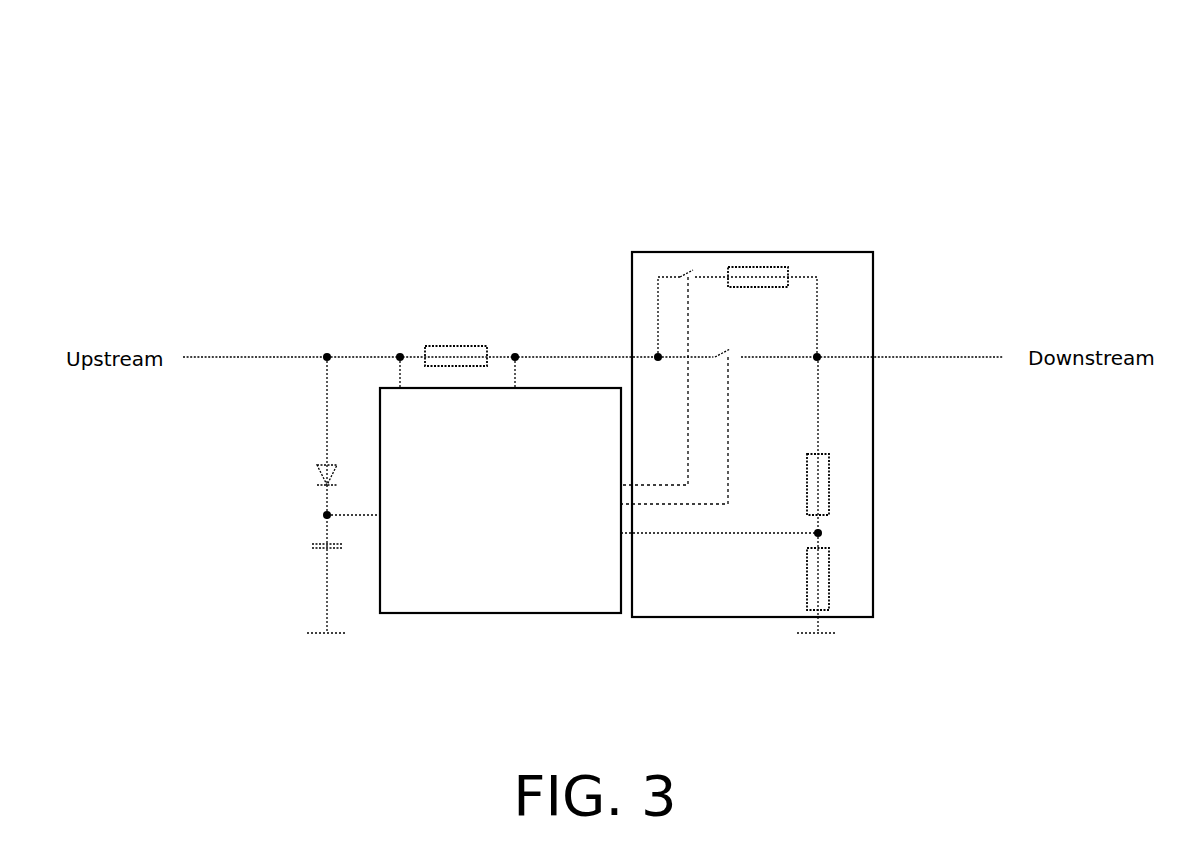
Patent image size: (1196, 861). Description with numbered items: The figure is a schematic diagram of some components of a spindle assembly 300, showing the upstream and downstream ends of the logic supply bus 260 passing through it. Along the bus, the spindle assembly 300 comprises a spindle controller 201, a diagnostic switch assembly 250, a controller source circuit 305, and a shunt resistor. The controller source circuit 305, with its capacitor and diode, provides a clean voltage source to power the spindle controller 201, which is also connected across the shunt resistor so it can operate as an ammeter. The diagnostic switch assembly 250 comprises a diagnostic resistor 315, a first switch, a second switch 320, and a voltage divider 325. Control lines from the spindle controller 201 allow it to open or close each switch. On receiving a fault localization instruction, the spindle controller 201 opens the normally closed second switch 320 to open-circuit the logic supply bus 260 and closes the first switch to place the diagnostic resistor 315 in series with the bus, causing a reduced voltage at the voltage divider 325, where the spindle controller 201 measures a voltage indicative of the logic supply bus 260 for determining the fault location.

The spindle assembly 300 is at (330, 93).
The logic supply bus 260 is at (252, 357).
The controller source circuit 305 is at (303, 503).
The spindle controller 201 is at (500, 500).
The diagnostic switch assembly 250 is at (873, 305).
The diagnostic resistor 315 is at (760, 267).
The second switch 320 is at (727, 343).
The voltage divider 325 is at (845, 536).